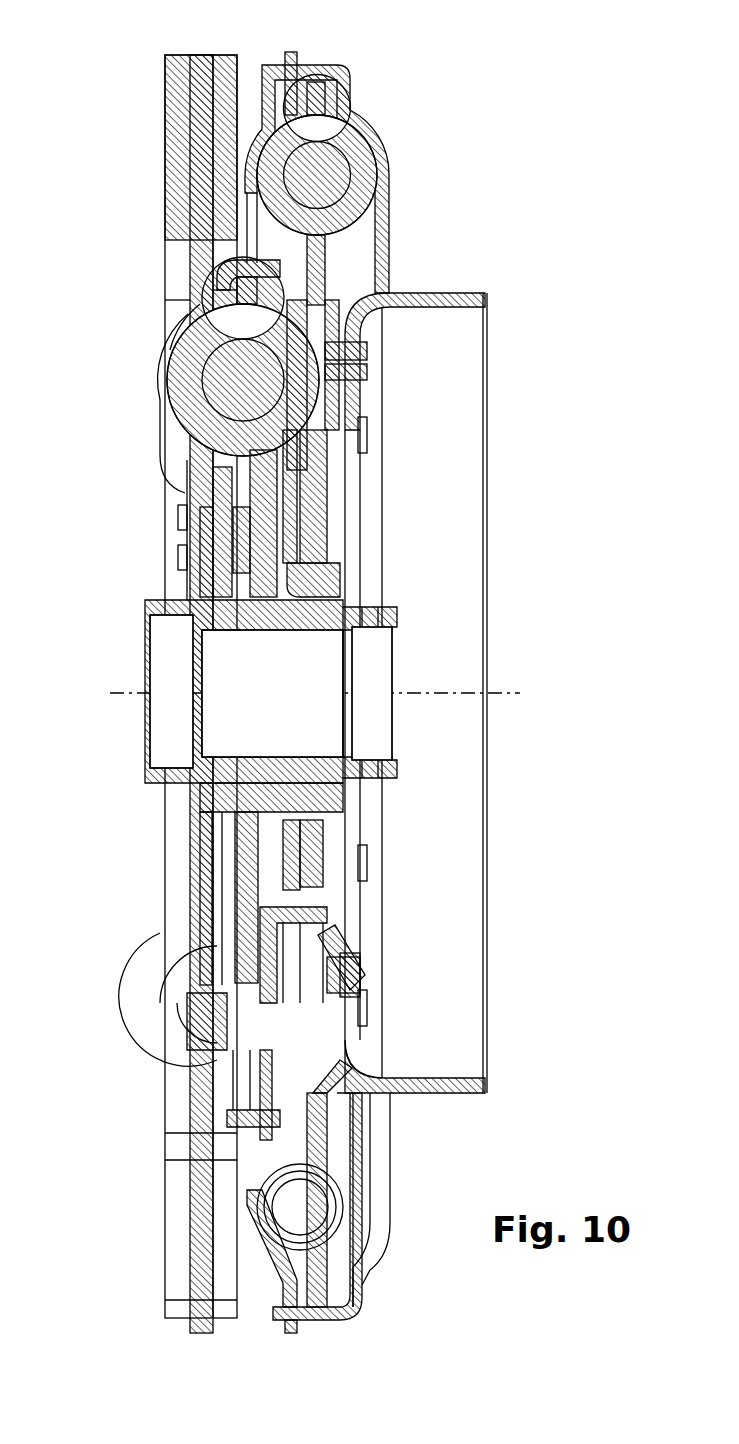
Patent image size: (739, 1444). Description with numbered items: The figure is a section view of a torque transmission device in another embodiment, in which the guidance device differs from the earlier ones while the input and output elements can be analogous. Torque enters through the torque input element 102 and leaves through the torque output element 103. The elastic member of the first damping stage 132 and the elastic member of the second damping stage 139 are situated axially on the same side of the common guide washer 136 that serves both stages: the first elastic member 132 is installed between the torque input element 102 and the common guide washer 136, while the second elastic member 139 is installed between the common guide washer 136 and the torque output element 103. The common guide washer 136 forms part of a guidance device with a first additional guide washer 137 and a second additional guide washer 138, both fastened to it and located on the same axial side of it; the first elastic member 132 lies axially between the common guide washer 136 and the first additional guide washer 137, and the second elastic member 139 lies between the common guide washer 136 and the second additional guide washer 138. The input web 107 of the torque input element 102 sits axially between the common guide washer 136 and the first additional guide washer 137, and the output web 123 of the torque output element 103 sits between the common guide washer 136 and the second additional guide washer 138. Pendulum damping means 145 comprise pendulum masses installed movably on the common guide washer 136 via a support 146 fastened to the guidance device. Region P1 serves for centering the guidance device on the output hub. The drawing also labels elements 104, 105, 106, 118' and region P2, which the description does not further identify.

The torque input element 102 is at (493, 520).
The torque output element 103 is at (125, 717).
The housing wall 104 is at (470, 689).
The housing wall 105 is at (355, 400).
The housing 106 is at (458, 307).
The input web 107 is at (327, 243).
The piston element 118' is at (387, 812).
The output web 123 is at (300, 522).
The elastic member of first damping stage 132 is at (330, 180).
The common guide washer 136 is at (273, 102).
The first additional guide washer 137 is at (385, 190).
The second additional guide washer 138 is at (372, 283).
The elastic member of second damping stage 139 is at (168, 378).
The pendulum damping means 145 is at (177, 133).
The support 146 is at (192, 277).
The centering region P1 is at (245, 635).
The pressure chamber P2 is at (305, 600).